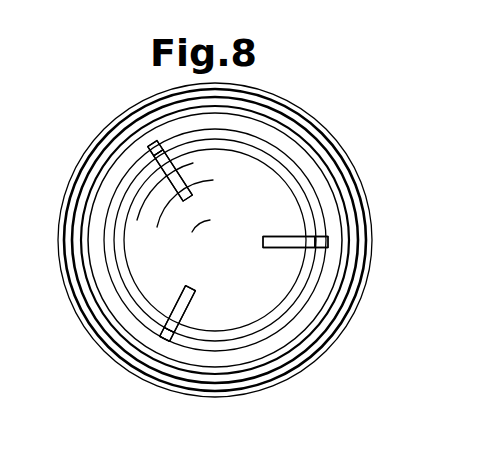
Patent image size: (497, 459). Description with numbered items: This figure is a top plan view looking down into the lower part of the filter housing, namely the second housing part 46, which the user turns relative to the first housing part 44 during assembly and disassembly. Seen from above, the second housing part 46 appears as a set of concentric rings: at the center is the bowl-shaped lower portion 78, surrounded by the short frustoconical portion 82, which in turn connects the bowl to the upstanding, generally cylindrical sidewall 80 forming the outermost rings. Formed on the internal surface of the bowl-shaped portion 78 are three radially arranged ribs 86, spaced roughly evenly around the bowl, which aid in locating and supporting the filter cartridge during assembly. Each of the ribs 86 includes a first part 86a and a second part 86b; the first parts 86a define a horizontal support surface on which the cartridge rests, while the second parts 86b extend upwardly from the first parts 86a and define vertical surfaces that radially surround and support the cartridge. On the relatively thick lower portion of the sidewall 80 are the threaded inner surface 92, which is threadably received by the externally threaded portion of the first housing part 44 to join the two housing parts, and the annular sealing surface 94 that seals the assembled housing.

The first housing part 44 is at (297, 262).
The second housing part 46 is at (330, 100).
The bowl-shaped lower portion 78 is at (253, 212).
The sidewall 80 is at (372, 262).
The frustoconical portion 82 is at (130, 335).
The ribs 86 is at (145, 180).
The first part 86a is at (187, 185).
The second part 86b is at (150, 157).
The threaded inner surface 92 is at (305, 340).
The annular sealing surface 94 is at (330, 318).